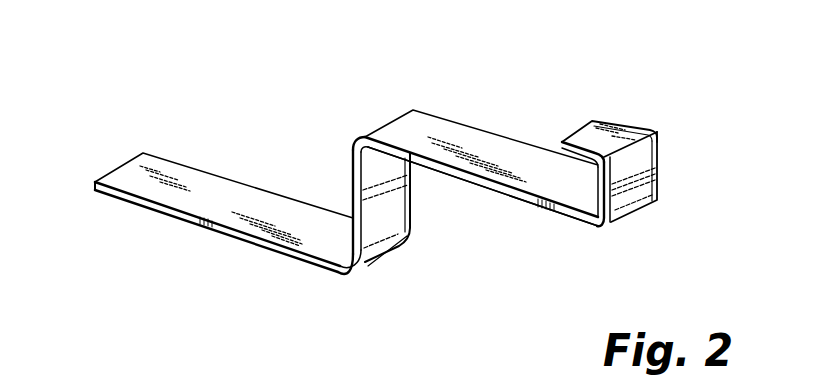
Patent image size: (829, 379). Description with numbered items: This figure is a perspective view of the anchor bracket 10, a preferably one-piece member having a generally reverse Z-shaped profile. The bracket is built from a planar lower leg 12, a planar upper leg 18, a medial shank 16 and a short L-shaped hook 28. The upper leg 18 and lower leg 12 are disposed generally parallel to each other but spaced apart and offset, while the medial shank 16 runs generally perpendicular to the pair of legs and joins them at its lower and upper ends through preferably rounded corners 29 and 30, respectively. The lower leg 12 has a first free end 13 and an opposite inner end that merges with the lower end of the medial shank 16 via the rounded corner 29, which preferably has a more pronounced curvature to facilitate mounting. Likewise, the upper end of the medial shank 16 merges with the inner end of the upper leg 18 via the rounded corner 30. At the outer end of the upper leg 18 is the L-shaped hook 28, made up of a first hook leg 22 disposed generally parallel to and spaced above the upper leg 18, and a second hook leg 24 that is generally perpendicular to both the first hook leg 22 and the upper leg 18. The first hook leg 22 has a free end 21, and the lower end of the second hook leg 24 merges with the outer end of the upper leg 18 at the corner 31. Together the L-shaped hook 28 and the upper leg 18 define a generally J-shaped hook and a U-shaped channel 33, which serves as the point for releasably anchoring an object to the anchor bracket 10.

The anchor bracket 10 is at (324, 76).
The lower leg 12 is at (226, 209).
The first free end 13 is at (93, 183).
The medial shank 16 is at (391, 226).
The upper leg 18 is at (563, 190).
The free end 21 is at (562, 141).
The first hook leg 22 is at (605, 130).
The second hook leg 24 is at (648, 158).
The L-shaped hook 28 is at (660, 129).
The rounded corner 29 is at (336, 268).
The rounded corner 30 is at (352, 142).
The corner 31 is at (600, 224).
The U-shaped channel 33 is at (593, 181).